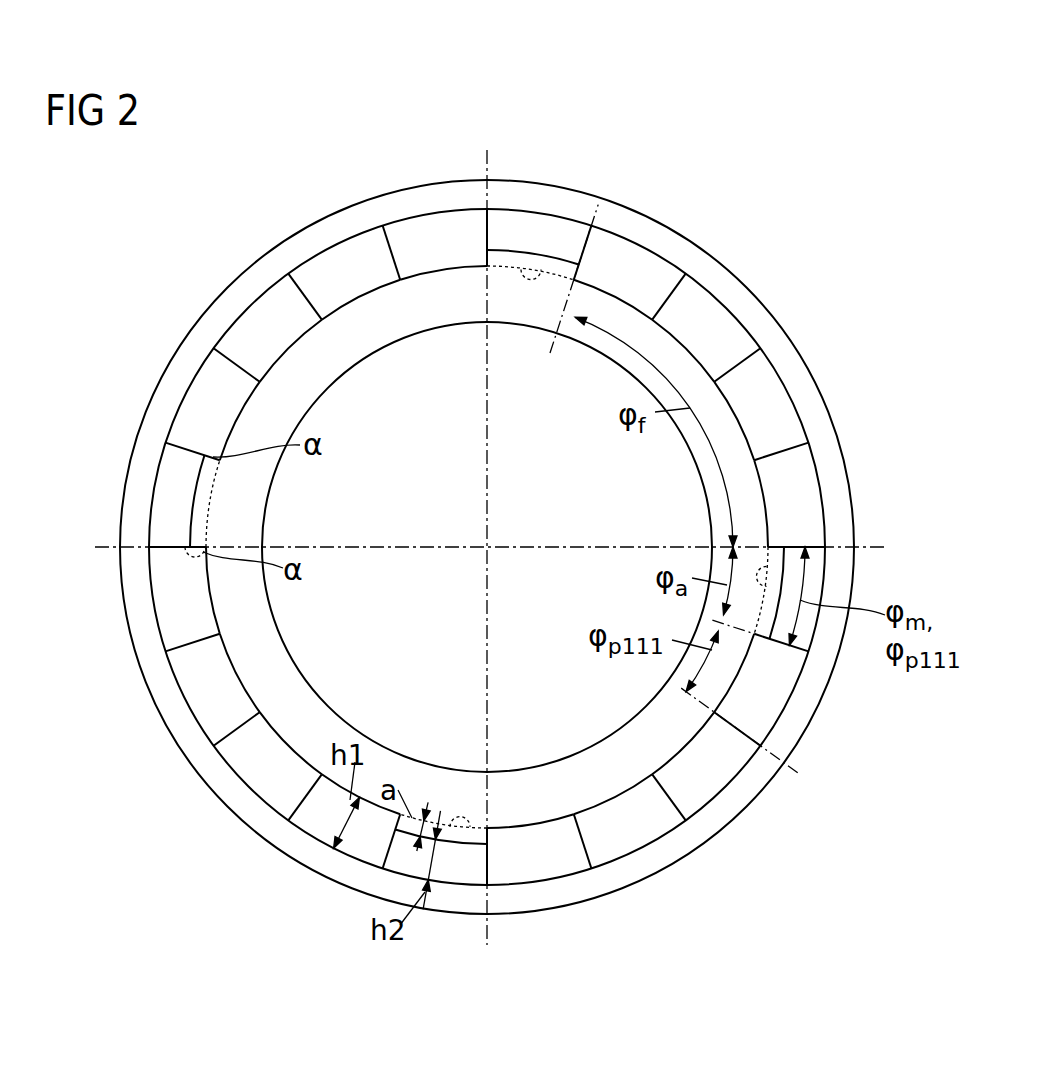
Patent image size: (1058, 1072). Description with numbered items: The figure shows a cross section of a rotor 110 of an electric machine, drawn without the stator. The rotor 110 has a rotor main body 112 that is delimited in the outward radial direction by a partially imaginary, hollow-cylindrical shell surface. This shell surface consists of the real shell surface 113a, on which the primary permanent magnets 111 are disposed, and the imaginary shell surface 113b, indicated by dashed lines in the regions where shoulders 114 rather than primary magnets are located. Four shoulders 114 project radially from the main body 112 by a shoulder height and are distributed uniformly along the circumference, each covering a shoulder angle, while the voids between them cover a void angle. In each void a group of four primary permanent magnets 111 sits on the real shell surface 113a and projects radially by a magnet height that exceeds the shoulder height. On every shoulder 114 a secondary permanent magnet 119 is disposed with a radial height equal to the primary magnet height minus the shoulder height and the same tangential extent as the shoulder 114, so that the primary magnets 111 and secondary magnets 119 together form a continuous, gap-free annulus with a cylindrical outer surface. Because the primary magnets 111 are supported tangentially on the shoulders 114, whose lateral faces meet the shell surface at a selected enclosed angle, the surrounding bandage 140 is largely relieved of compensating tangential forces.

The rotor 110 is at (445, 480).
The primary permanent magnets 111 is at (465, 257).
The rotor main body 112 is at (262, 655).
The real shell surface 113a is at (375, 281).
The imaginary shell surface 113b is at (200, 497).
The shoulders 114 is at (594, 212).
The secondary permanent magnets 119 is at (503, 212).
The bandage 140 is at (160, 392).